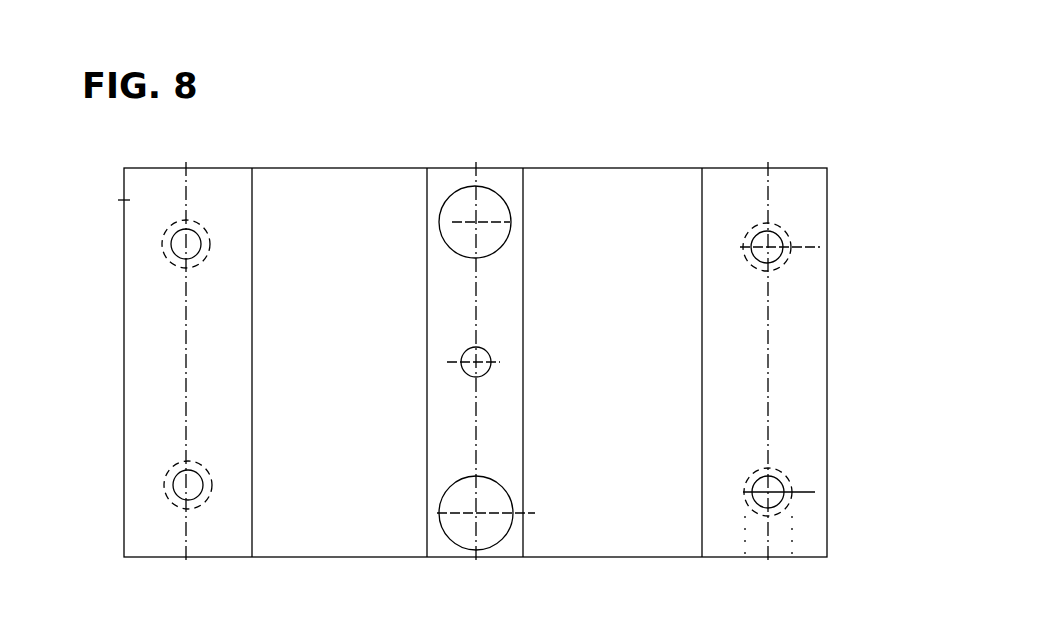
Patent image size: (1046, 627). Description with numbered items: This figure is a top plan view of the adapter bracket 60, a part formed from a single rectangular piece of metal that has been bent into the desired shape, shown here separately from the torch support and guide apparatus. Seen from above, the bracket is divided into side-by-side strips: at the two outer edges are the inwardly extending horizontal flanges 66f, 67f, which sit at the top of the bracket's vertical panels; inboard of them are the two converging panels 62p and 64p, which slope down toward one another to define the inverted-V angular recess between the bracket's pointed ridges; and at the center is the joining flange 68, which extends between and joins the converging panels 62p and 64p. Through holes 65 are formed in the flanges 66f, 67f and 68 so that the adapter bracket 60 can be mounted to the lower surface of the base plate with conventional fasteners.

The adapter bracket 60 is at (682, 156).
The converging panel 62p is at (364, 362).
The converging panel 64p is at (629, 362).
The through holes 65 is at (182, 478).
The horizontal flange 66f is at (185, 362).
The horizontal flange 67f is at (794, 362).
The joining flange 68 is at (486, 362).